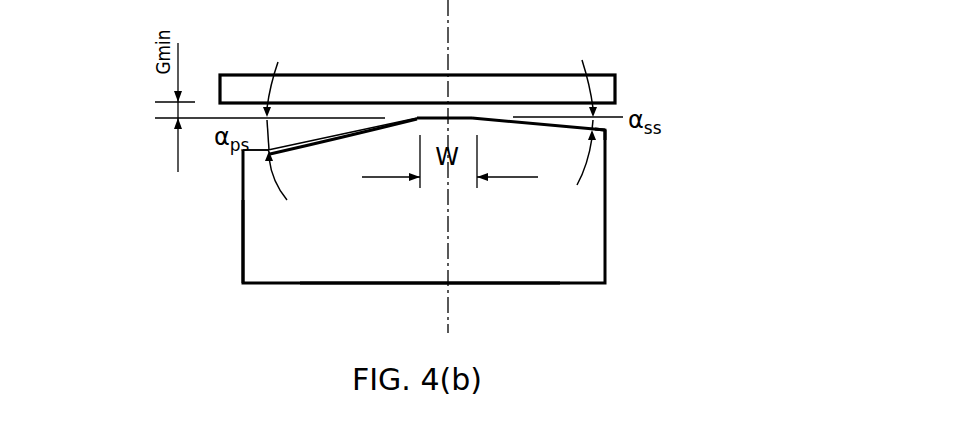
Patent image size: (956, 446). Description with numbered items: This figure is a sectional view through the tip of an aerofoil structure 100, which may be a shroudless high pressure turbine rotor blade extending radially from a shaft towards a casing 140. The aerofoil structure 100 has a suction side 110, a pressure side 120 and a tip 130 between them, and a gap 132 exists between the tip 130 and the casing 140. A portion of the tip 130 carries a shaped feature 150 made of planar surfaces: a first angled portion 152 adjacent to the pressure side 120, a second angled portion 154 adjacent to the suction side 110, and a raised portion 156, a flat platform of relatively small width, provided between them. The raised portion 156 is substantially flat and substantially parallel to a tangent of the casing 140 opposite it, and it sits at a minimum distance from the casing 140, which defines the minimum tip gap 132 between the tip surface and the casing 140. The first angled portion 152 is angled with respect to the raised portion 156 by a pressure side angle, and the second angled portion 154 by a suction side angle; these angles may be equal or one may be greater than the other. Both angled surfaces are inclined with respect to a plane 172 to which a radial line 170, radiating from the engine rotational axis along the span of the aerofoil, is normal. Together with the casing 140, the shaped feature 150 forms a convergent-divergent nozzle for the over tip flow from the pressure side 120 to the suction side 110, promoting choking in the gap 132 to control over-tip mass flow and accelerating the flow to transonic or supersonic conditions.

The aerofoil structure 100 is at (563, 300).
The suction side 110 is at (606, 247).
The pressure side 120 is at (258, 240).
The tip 130 is at (495, 117).
The gap 132 is at (163, 110).
The casing 140 is at (602, 80).
The shaped feature 150 is at (340, 134).
The first angled portion 152 is at (259, 151).
The second angled portion 154 is at (606, 143).
The raised portion 156 is at (435, 117).
The radial line 170 is at (447, 268).
The plane 172 is at (288, 118).